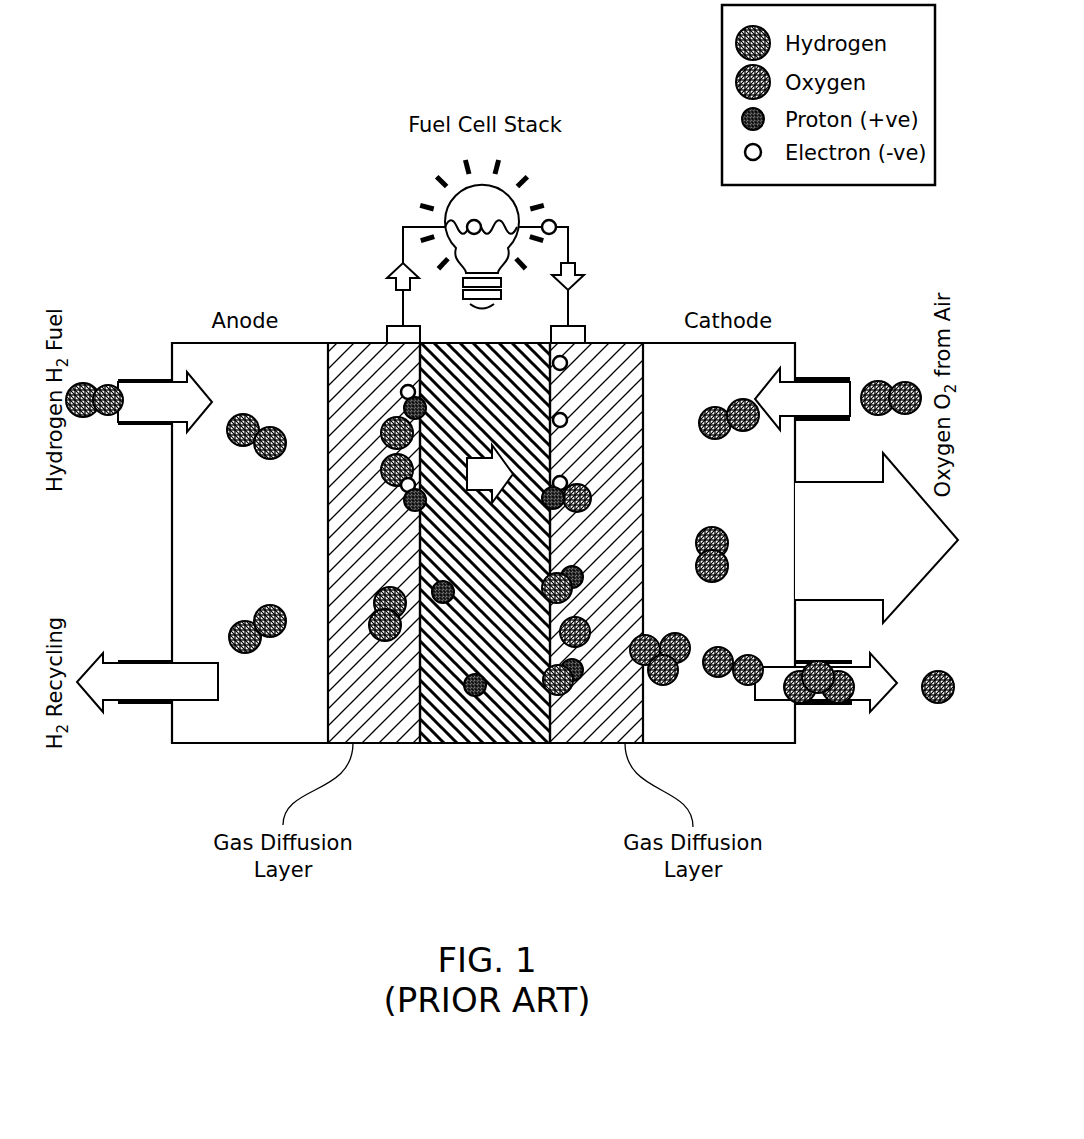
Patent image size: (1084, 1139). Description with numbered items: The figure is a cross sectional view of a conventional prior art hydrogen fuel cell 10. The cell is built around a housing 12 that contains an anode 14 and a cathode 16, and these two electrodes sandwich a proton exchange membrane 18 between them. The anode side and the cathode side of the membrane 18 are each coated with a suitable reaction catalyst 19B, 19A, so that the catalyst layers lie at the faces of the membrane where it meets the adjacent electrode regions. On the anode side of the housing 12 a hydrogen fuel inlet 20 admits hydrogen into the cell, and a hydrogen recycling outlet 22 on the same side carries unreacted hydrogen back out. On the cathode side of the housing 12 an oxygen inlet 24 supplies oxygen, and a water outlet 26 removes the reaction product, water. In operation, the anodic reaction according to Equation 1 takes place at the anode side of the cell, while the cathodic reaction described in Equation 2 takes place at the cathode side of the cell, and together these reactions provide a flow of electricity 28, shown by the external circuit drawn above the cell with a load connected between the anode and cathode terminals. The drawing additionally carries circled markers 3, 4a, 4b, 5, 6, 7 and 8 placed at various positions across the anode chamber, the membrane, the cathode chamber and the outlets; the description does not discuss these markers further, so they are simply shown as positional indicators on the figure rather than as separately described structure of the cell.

The hydrogen fuel cell 10 is at (138, 230).
The housing 12 is at (172, 590).
The anode 14 is at (292, 348).
The cathode 16 is at (668, 348).
The proton exchange membrane 18 is at (485, 743).
The reaction catalyst 19A is at (550, 743).
The reaction catalyst 19B is at (418, 743).
The hydrogen fuel inlet 20 is at (131, 415).
The hydrogen recycling outlet 22 is at (136, 705).
The oxygen inlet 24 is at (872, 383).
The water outlet 26 is at (888, 673).
The flow of electricity 28 is at (588, 200).
The step 1 hydrogen fuel supply 1 is at (189, 481).
The step 2 hydrogen diffusion 2 is at (377, 583).
The step 3 hydrogen splitting at anode catalyst 3 is at (386, 440).
The step 4a electron flow through external circuit 4a is at (372, 202).
The step 4b proton transport through membrane 4b is at (471, 611).
The step 5 oxygen supply 5 is at (788, 444).
The step 6 oxygen reduction at cathode catalyst 6 is at (587, 434).
The step 7 water formation 7 is at (587, 630).
The step 8 water exhaust 8 is at (755, 701).